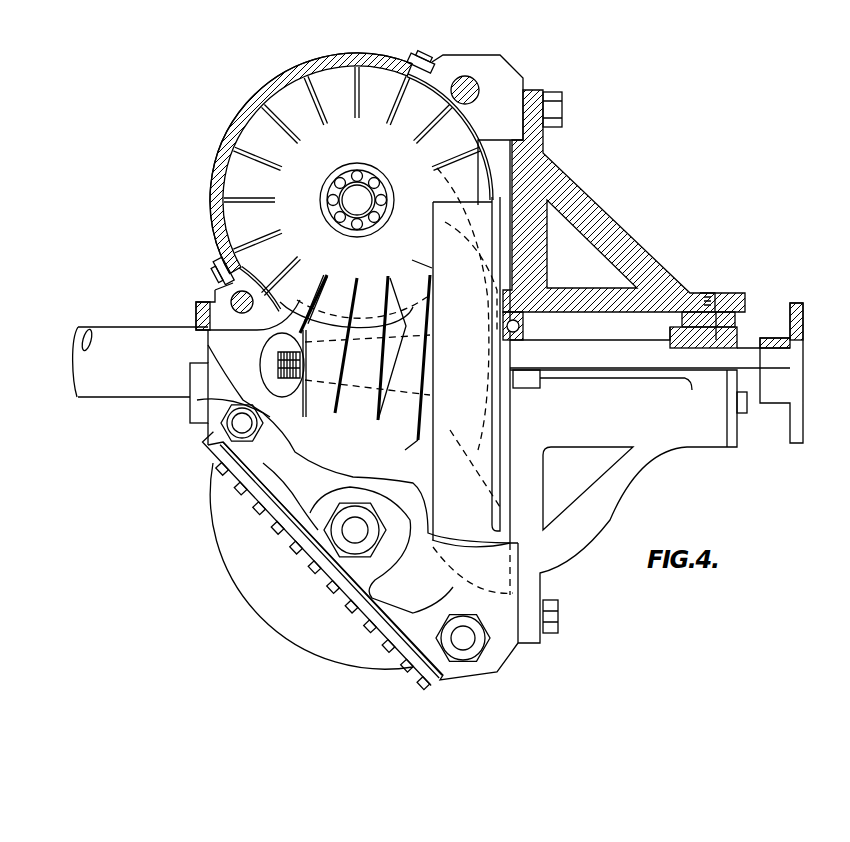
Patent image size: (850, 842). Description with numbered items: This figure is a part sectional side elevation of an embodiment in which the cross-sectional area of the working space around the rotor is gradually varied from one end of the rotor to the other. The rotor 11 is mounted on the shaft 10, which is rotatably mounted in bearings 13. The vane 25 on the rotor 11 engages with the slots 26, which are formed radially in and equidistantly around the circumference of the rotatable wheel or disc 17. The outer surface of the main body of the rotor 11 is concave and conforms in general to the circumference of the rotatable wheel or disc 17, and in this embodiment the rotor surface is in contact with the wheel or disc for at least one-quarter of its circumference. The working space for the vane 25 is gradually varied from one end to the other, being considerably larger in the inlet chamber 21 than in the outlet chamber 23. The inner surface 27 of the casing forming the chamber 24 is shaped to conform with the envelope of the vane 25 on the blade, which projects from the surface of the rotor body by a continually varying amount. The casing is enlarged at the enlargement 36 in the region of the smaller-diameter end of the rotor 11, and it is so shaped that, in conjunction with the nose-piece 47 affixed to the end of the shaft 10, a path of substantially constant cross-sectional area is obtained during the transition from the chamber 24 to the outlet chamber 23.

The shaft 10 is at (623, 348).
The rotor 11 is at (317, 392).
The bearings 13 is at (543, 290).
The rotatable wheel or disc 17 is at (260, 127).
The inlet chamber 21 is at (497, 167).
The outlet chamber 23 is at (233, 357).
The chamber 24 is at (315, 412).
The vane 25 is at (343, 412).
The slots 26 is at (225, 145).
The inner surface of the casing 27 is at (402, 418).
The enlargement of the casing 36 is at (302, 297).
The nose-piece 47 is at (273, 382).